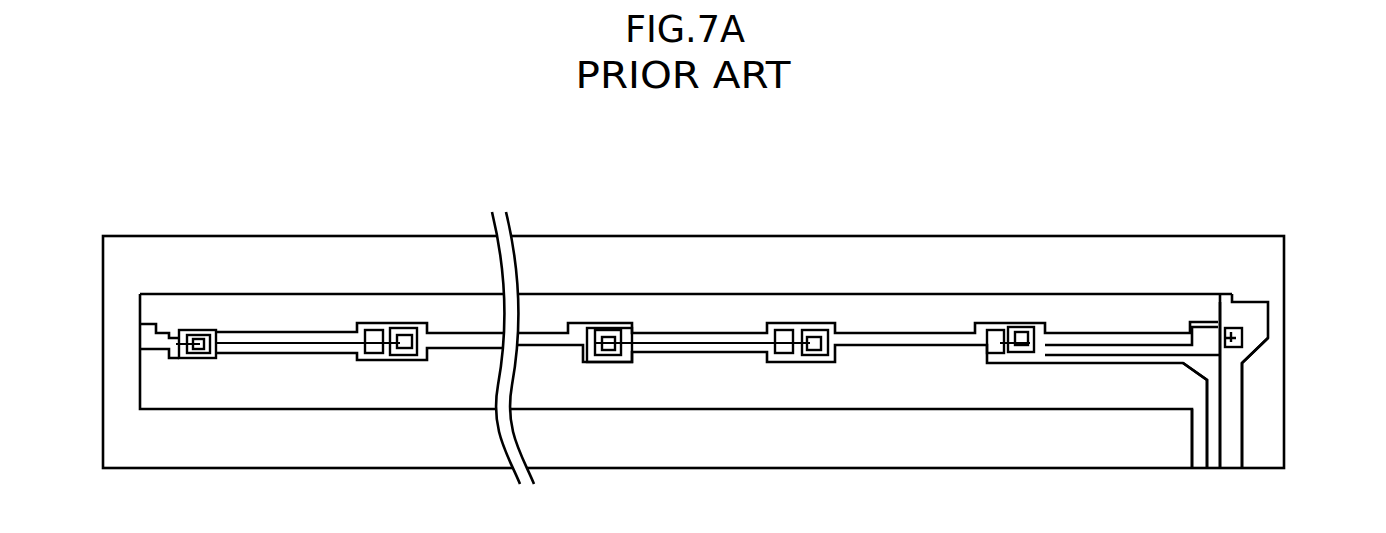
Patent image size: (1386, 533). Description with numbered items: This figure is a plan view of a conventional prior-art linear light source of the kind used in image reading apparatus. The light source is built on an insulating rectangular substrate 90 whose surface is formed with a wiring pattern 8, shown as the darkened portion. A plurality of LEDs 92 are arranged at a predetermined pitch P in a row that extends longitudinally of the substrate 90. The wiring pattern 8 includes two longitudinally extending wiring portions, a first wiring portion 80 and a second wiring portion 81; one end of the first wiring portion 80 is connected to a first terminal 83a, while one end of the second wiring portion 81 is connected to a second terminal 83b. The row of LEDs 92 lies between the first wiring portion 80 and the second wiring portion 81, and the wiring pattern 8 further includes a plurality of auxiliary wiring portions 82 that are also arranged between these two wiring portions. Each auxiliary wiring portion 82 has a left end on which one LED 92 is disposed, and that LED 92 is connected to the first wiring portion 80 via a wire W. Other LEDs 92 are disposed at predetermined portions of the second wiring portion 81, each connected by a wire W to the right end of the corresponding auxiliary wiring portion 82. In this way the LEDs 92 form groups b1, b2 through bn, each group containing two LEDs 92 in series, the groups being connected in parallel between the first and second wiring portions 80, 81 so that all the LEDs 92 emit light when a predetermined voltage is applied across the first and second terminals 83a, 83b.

The first wiring portion 80 is at (907, 393).
The insulating rectangular substrate 90 is at (1172, 236).
The wiring pattern 8 is at (936, 292).
The second wiring portion 81 is at (878, 302).
The auxiliary wiring portion 82 is at (282, 332).
The LED 92 is at (213, 334).
The wire W is at (182, 338).
The pitch P is at (1231, 490).
The LED group bn is at (313, 362).
The LED group b2 is at (740, 362).
The LED group b1 is at (1080, 365).
The first terminal 83a is at (1197, 468).
The second terminal 83b is at (1231, 480).